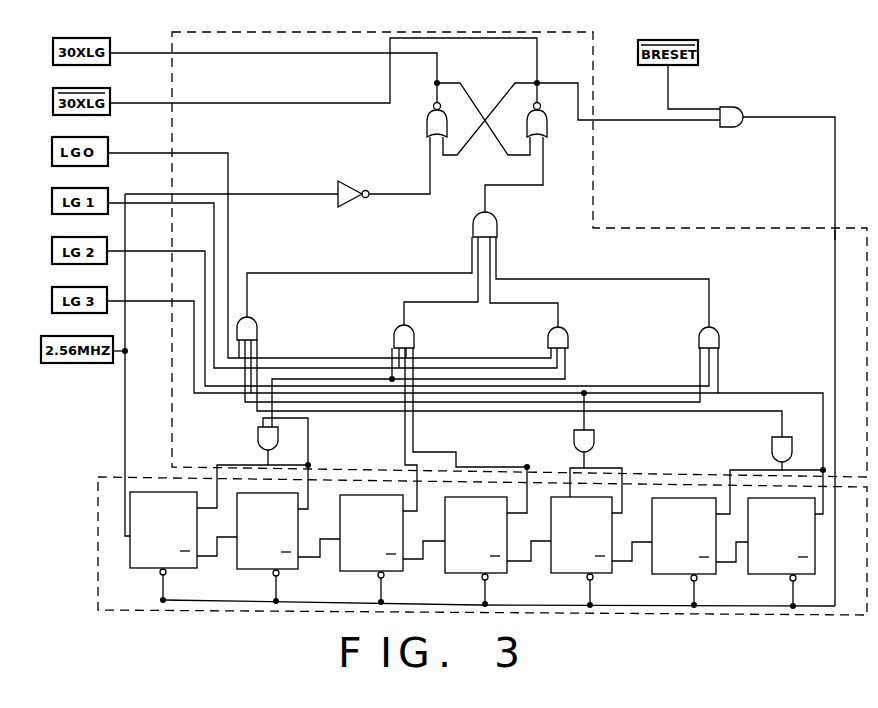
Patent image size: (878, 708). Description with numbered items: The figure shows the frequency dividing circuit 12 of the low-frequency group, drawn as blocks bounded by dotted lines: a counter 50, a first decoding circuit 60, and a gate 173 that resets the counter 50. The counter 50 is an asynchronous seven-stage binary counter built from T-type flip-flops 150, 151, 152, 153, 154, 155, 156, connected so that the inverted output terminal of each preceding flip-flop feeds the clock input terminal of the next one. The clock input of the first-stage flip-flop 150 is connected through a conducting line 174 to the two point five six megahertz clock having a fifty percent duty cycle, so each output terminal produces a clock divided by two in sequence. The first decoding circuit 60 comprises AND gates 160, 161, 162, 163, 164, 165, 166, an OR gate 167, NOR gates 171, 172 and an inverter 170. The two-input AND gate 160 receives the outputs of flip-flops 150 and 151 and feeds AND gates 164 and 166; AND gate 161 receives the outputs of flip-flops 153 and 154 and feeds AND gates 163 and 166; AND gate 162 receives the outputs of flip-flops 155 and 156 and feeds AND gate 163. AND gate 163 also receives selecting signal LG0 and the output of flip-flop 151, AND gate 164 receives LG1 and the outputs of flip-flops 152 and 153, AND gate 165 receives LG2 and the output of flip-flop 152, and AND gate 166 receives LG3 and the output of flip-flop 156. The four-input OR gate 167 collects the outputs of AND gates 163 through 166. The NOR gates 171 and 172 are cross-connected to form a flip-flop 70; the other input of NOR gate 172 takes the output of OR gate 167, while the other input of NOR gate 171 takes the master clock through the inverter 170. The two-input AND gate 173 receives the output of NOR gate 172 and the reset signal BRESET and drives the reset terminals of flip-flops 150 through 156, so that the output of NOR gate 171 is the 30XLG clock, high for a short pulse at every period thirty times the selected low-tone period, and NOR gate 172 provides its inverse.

The frequency dividing circuit 12 is at (801, 78).
The counter 50 is at (98, 546).
The first decoding circuit 60 is at (594, 187).
The flip-flop 70 is at (498, 92).
The T-type flip-flop 150 is at (138, 577).
The T-type flip-flop 151 is at (284, 577).
The T-type flip-flop 152 is at (389, 579).
The T-type flip-flop 153 is at (493, 581).
The T-type flip-flop 154 is at (598, 581).
The T-type flip-flop 155 is at (701, 582).
The T-type flip-flop 156 is at (800, 582).
The two-input AND gate 160 is at (257, 439).
The two-input AND gate 161 is at (595, 442).
The two-input AND gate 162 is at (771, 448).
The AND gate 163 is at (258, 332).
The AND gate 164 is at (415, 340).
The AND gate 165 is at (569, 340).
The AND gate 166 is at (720, 340).
The four-input OR gate 167 is at (497, 226).
The inverter 170 is at (352, 182).
The NOR gate 171 is at (427, 129).
The NOR gate 172 is at (548, 128).
The two-input AND gate 173 is at (735, 98).
The conducting line 174 is at (126, 406).